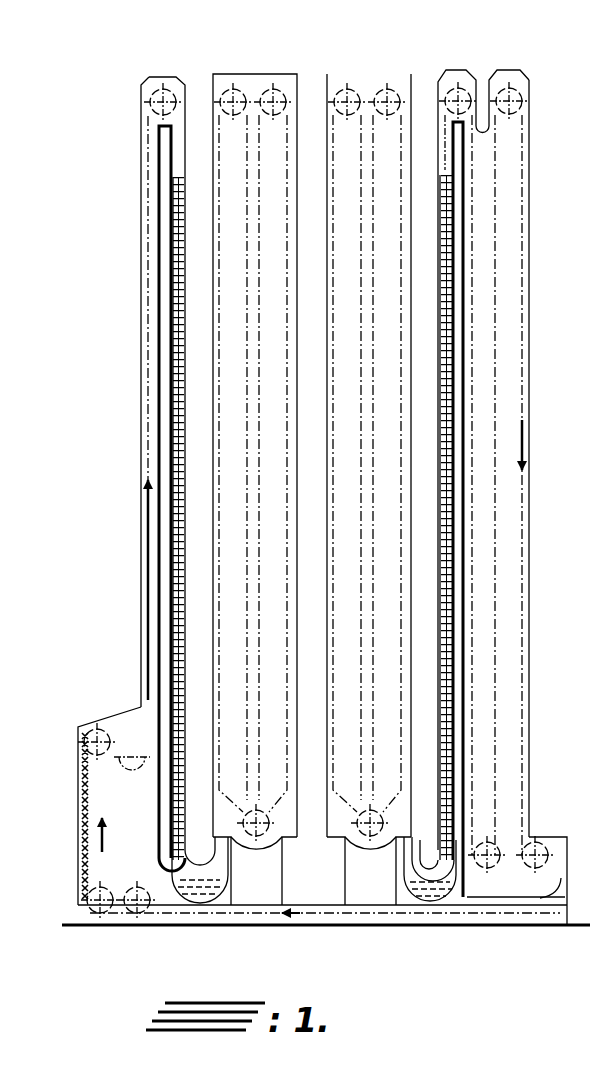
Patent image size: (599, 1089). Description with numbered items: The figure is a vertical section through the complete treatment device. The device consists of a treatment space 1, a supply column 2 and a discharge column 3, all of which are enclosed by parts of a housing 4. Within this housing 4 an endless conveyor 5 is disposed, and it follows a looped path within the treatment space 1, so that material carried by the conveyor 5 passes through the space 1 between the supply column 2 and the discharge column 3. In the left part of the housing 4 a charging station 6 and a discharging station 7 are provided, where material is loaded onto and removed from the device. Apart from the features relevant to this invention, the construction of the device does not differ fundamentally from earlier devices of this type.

The treatment space 1 is at (261, 83).
The supply column 2 is at (444, 80).
The discharge column 3 is at (169, 84).
The housing 4 is at (341, 71).
The endless conveyor 5 is at (141, 363).
The charging station 6 is at (77, 775).
The discharging station 7 is at (76, 879).